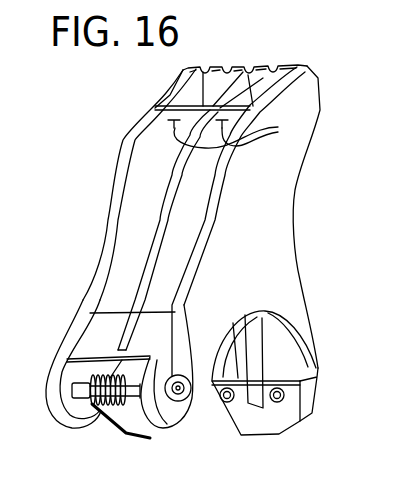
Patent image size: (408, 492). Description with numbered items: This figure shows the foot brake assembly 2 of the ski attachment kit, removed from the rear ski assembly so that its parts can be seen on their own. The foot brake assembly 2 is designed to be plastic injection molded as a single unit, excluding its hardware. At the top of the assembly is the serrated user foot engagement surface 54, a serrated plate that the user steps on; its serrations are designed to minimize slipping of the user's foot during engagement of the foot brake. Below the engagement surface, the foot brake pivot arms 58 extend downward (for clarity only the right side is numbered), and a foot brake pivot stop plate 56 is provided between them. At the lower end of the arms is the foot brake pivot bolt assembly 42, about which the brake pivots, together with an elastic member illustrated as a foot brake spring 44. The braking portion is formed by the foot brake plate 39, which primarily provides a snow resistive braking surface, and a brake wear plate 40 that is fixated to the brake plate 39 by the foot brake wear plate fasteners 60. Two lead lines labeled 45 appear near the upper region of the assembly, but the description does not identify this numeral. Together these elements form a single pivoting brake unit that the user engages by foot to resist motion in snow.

The foot brake assembly 2 is at (97, 163).
The serrated user foot engagement surface 54 is at (242, 65).
The guide members 45 is at (236, 132).
The foot brake pivot stop plate 56 is at (96, 320).
The foot brake pivot arms 58 is at (47, 393).
The foot brake spring 44 is at (110, 427).
The foot brake pivot bolt assembly 42 is at (177, 401).
The foot brake wear plate fasteners 60 is at (225, 366).
The foot brake plate 39 is at (231, 362).
The brake wear plate 40 is at (258, 437).